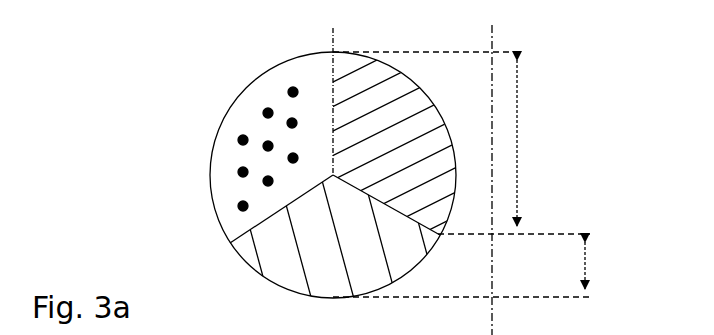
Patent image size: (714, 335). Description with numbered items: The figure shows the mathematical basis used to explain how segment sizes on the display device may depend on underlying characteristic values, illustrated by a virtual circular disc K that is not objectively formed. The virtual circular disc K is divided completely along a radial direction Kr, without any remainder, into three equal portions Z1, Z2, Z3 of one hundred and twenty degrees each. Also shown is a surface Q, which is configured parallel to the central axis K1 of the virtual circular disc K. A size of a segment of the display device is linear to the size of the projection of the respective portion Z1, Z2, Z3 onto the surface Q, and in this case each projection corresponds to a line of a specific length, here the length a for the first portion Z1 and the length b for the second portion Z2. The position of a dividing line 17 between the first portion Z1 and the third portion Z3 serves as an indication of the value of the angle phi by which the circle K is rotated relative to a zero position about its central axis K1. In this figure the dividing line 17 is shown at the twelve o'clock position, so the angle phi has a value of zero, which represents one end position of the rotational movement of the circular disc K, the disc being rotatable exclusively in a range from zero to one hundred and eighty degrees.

The dividing line 17 is at (333, 45).
The first portion Z1 is at (390, 82).
The second portion Z2 is at (298, 272).
The third portion Z3 is at (233, 172).
The virtual circular disc K is at (225, 87).
The central axis K1 is at (268, 218).
The radial direction Kr is at (467, 175).
The surface Q is at (493, 35).
The projection of first portion a is at (519, 121).
The projection of second portion b is at (588, 268).
The angle phi is at (336, 331).